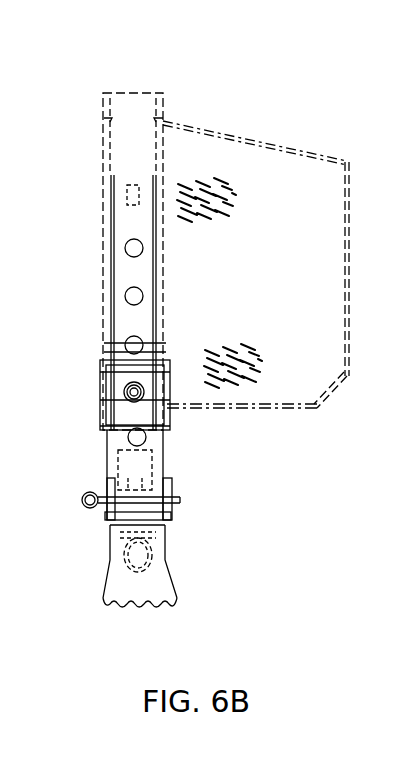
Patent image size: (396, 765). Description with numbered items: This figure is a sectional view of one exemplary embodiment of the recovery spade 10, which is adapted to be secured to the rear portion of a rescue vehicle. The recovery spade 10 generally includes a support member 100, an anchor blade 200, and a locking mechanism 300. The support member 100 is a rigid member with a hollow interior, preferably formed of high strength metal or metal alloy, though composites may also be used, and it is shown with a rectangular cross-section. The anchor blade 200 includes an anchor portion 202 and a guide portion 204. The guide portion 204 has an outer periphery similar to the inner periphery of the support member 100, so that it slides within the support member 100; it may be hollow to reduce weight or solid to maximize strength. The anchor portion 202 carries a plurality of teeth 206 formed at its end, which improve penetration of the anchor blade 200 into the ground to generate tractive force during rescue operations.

The recovery spade 10 is at (80, 80).
The support member 100 is at (165, 102).
The anchor blade 200 is at (172, 558).
The anchor portion 202 is at (105, 580).
The guide portion 204 is at (110, 470).
The teeth 206 is at (155, 606).
The locking mechanism 300 is at (183, 494).